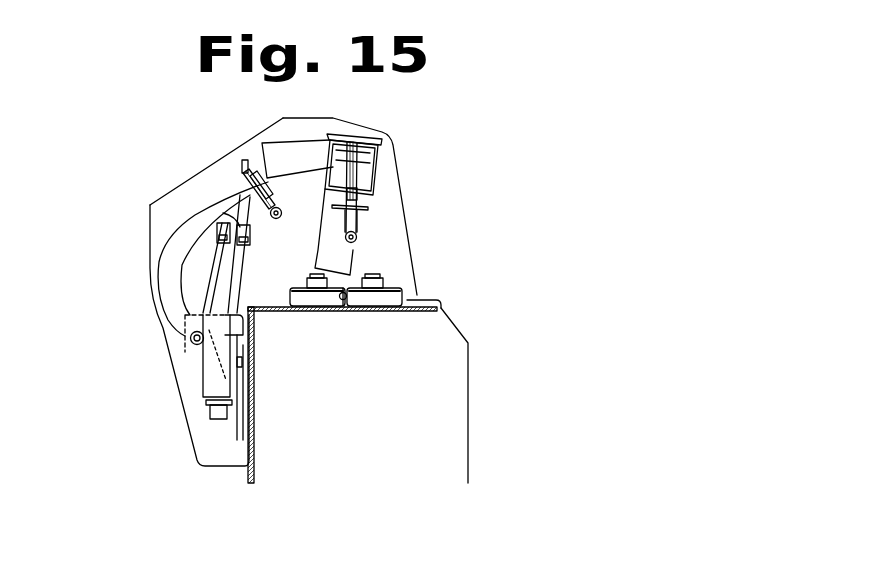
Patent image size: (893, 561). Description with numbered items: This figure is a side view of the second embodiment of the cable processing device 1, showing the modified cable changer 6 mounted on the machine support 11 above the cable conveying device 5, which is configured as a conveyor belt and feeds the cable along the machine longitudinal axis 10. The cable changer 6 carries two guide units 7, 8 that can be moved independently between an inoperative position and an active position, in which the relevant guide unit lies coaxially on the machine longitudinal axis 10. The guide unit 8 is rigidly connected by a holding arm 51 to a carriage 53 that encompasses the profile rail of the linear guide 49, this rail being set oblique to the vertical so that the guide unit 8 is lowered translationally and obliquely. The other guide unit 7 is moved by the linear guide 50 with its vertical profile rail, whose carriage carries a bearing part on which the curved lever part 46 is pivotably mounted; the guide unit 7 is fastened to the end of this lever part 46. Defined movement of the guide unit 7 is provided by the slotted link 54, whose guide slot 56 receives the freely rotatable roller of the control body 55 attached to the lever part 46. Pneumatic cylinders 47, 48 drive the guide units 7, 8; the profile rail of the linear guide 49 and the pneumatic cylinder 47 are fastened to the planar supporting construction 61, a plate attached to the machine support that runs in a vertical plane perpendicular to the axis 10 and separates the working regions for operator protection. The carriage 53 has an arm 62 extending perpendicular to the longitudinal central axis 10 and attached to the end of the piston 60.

The cable processing device 1 is at (81, 136).
The cable conveying device 5 is at (392, 282).
The cable changer 6 is at (151, 186).
The guide unit 7 is at (277, 219).
The guide unit 8 is at (358, 231).
The machine longitudinal axis 10 is at (343, 300).
The machine support 11 is at (407, 432).
The lever part 46 is at (172, 247).
The pneumatic cylinder 47 is at (223, 299).
The pneumatic cylinder 48 is at (213, 408).
The linear guide 49 is at (368, 136).
The linear guide 50 is at (238, 442).
The holding arm 51 is at (343, 170).
The carriage 53 is at (376, 167).
The slotted link 54 is at (197, 383).
The control body 55 is at (199, 345).
The guide slot 56 is at (220, 370).
The piston 60 is at (155, 212).
The supporting construction 61 is at (186, 181).
The arm 62 is at (297, 160).